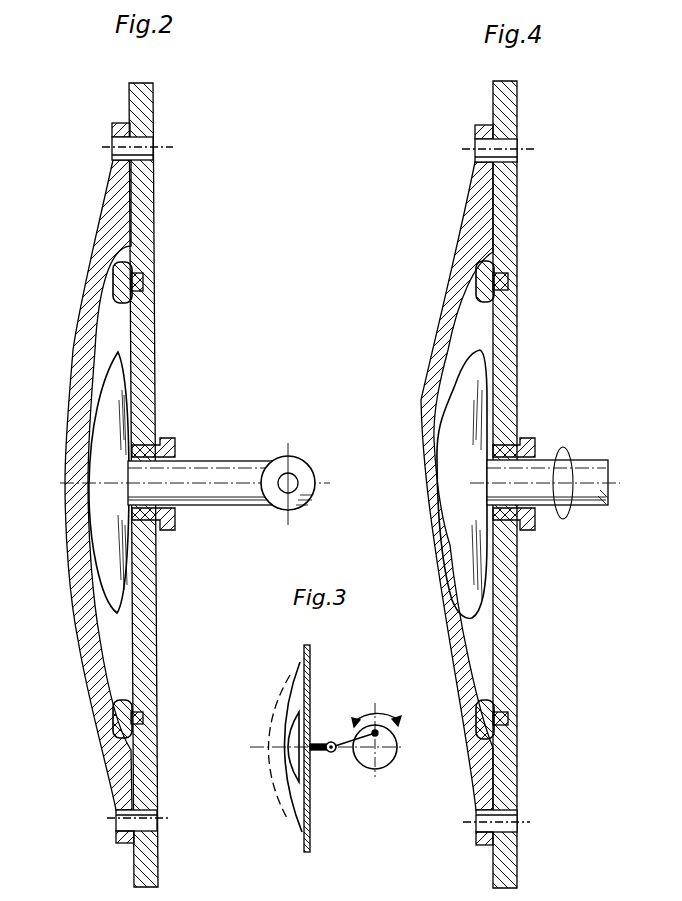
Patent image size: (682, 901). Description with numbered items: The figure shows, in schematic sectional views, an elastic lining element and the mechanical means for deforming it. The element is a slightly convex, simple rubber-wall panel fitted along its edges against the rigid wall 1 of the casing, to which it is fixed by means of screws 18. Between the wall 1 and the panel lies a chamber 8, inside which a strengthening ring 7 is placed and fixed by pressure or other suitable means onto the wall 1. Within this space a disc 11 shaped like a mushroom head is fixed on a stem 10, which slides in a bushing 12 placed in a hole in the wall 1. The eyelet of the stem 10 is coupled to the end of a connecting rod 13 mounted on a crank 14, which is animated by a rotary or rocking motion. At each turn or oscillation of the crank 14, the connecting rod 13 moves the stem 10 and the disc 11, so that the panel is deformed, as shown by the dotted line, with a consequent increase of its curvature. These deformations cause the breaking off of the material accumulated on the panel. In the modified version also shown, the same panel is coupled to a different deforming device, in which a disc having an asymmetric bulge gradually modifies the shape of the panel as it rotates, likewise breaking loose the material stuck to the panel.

In FIG. 2, the wall 1 is at (141, 196).
In FIG. 3, the wall 1 is at (310, 677).
In FIG. 4, the wall 1 is at (503, 215).
In FIG. 2, the strengthening ring 7 is at (121, 272).
In FIG. 4, the strengthening ring 7 is at (488, 272).
In FIG. 2, the chamber 8 is at (119, 327).
In FIG. 4, the chamber 8 is at (473, 321).
In FIG. 2, the stem 10 is at (211, 470).
In FIG. 3, the stem 10 is at (321, 742).
In FIG. 4, the stem 10 is at (586, 472).
In FIG. 2, the disc 11 is at (105, 408).
In FIG. 3, the disc 11 is at (297, 769).
In FIG. 4, the disc 11 is at (459, 394).
In FIG. 2, the bushing 12 is at (177, 527).
In FIG. 4, the bushing 12 is at (514, 484).
In FIG. 3, the connecting rod 13 is at (345, 740).
In FIG. 3, the crank 14 is at (386, 759).
In FIG. 2, the screws 18 is at (148, 143).
In FIG. 4, the screws 18 is at (508, 146).